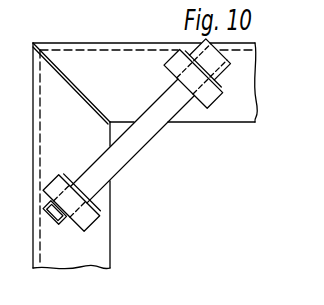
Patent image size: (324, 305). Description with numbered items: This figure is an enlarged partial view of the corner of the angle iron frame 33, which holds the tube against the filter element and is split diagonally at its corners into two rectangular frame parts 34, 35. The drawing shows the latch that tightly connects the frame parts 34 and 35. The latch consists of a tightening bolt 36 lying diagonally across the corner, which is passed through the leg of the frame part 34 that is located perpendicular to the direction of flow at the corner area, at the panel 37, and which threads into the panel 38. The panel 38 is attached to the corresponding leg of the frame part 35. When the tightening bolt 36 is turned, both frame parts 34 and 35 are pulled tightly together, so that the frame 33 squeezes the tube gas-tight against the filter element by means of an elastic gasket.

The angle iron frame 33 is at (71, 62).
The frame part 34 is at (238, 96).
The frame part 35 is at (95, 250).
The tightening bolt 36 is at (131, 145).
The panel 37 is at (213, 102).
The panel 38 is at (84, 212).